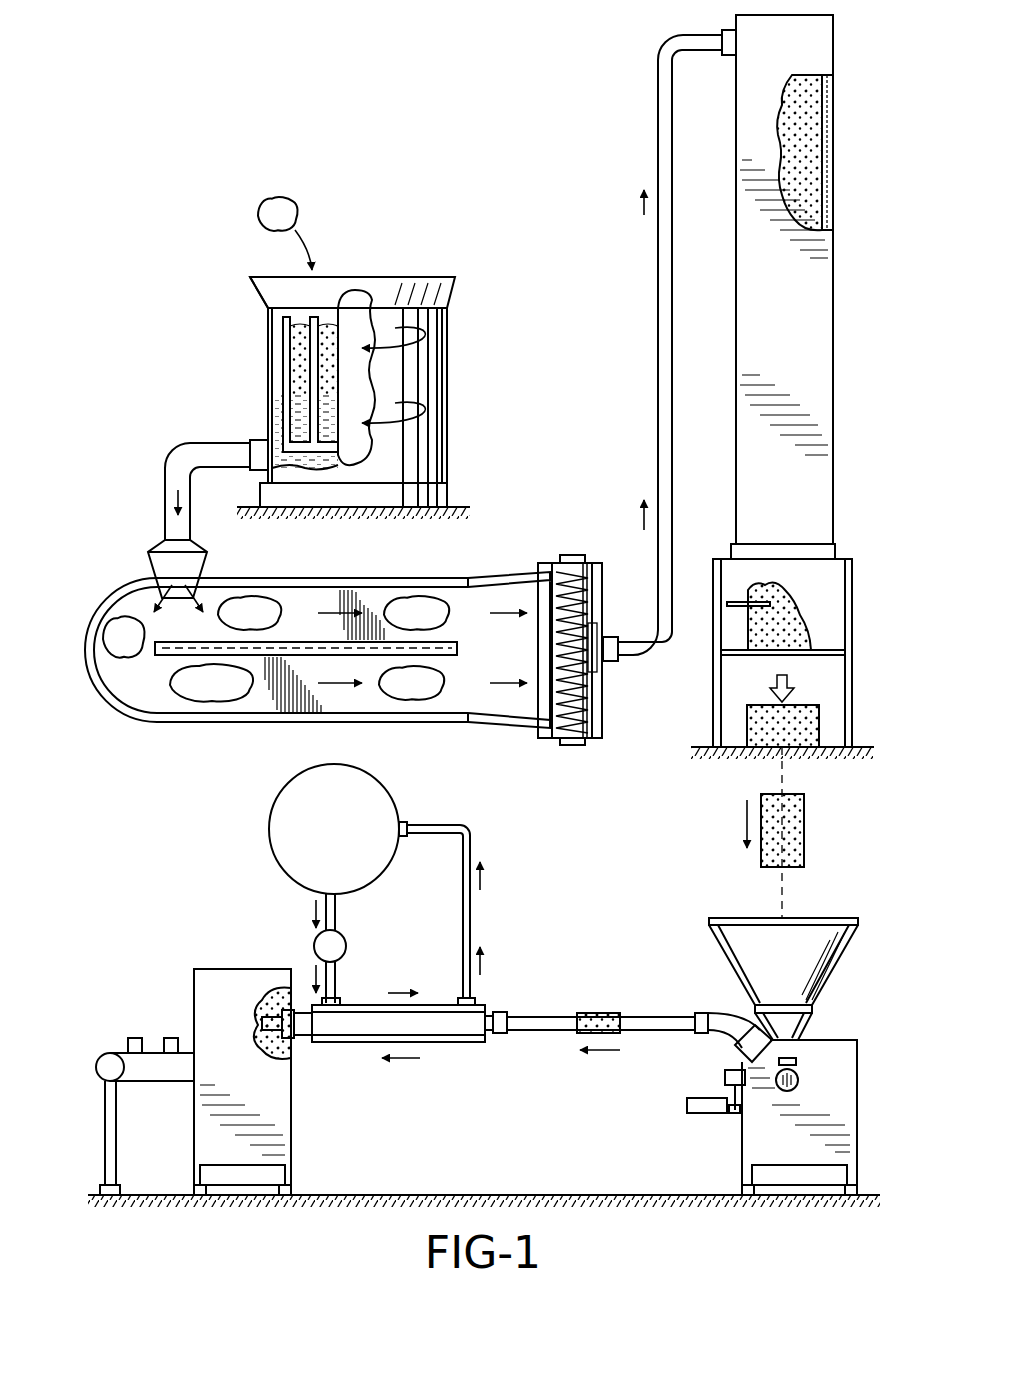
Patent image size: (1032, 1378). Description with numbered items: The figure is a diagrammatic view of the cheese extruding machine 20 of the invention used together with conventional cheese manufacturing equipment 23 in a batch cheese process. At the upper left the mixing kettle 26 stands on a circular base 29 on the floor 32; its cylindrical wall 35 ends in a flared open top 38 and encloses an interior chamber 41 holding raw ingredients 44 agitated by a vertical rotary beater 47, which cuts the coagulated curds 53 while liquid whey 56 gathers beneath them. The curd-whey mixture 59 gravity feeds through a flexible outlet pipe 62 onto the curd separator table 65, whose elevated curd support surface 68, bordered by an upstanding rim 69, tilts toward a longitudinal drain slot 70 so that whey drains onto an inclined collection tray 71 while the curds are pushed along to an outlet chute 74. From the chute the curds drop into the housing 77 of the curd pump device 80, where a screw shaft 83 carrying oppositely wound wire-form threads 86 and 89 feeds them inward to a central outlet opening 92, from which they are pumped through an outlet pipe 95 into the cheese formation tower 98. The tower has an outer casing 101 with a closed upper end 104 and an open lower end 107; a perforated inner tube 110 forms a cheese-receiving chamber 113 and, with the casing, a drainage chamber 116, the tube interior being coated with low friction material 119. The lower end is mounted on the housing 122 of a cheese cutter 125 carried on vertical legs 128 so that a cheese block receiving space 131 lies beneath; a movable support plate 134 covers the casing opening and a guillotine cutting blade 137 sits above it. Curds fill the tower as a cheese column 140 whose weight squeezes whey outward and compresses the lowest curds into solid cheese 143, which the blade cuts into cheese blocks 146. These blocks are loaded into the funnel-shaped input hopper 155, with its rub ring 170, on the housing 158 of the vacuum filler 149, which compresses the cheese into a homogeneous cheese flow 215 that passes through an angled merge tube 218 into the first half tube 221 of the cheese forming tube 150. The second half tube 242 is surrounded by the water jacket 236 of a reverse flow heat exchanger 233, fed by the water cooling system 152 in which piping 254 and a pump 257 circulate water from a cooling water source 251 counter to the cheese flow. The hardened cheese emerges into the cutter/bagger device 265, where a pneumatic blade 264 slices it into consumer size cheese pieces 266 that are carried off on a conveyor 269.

The cheese extruding machine 20 is at (485, 979).
The cheese manufacturing equipment 23 is at (300, 160).
The mixing kettle 26 is at (338, 505).
The circular base 29 is at (450, 492).
The floor 32 is at (460, 505).
The cylindrical wall 35 is at (447, 410).
The flared open top 38 is at (262, 298).
The interior chamber 41 is at (266, 318).
The raw ingredients 44 is at (258, 205).
The rotary beater 47 is at (281, 380).
The curds 53 is at (300, 352).
The liquid whey 56 is at (300, 425).
The curd-whey mixture 59 is at (122, 612).
The flexible outlet pipe 62 is at (182, 460).
The curd separator table 65 is at (317, 677).
The curd support surface 68 is at (338, 695).
The upstanding rim 69 is at (452, 722).
The longitudinal drain slot 70 is at (262, 653).
The collection tray 71 is at (318, 638).
The outlet chute 74 is at (510, 710).
The housing 77 is at (550, 740).
The curd pump device 80 is at (598, 669).
The screw shaft 83 is at (558, 577).
The external wire-form thread 86 is at (585, 575).
The external wire-form thread 89 is at (598, 712).
The central outlet opening 92 is at (592, 640).
The outlet pipe 95 is at (664, 342).
The cheese formation tower 98 is at (788, 279).
The outer casing 101 is at (772, 342).
The closed upper end 104 is at (745, 85).
The open lower end 107 is at (735, 468).
The perforated inner tube 110 is at (826, 175).
The cheese-receiving chamber 113 is at (833, 208).
The drainage chamber 116 is at (833, 98).
The low friction material 119 is at (808, 205).
The housing 122 is at (756, 700).
The cheese cutter 125 is at (716, 555).
The vertical legs 128 is at (712, 737).
The cheese block receiving space 131 is at (835, 690).
The movable support plate 134 is at (713, 652).
The cutting blade 137 is at (735, 602).
The cheese column 140 is at (797, 103).
The solid cheese 143 is at (790, 628).
The cheese blocks 146 is at (758, 755).
The vacuum filler 149 is at (746, 956).
The cheese forming tube 150 is at (535, 1012).
The water cooling system 152 is at (498, 922).
The input hopper 155 is at (722, 916).
The housing 158 is at (745, 1145).
The rub ring 170 is at (815, 1009).
The cheese flow 215 is at (262, 1020).
The merge tube 218 is at (735, 1045).
The first half tube 221 is at (670, 1015).
The reverse flow heat exchanger 233 is at (445, 1048).
The water jacket 236 is at (375, 1005).
The second half tube 242 is at (300, 1036).
The cooling water source 251 is at (282, 870).
The piping 254 is at (462, 870).
The pump 257 is at (347, 940).
The pneumatic blade 264 is at (278, 1042).
The cutter/bagger device 265 is at (195, 1054).
The consumer size cheese pieces 266 is at (171, 1036).
The conveyor 269 is at (137, 1100).